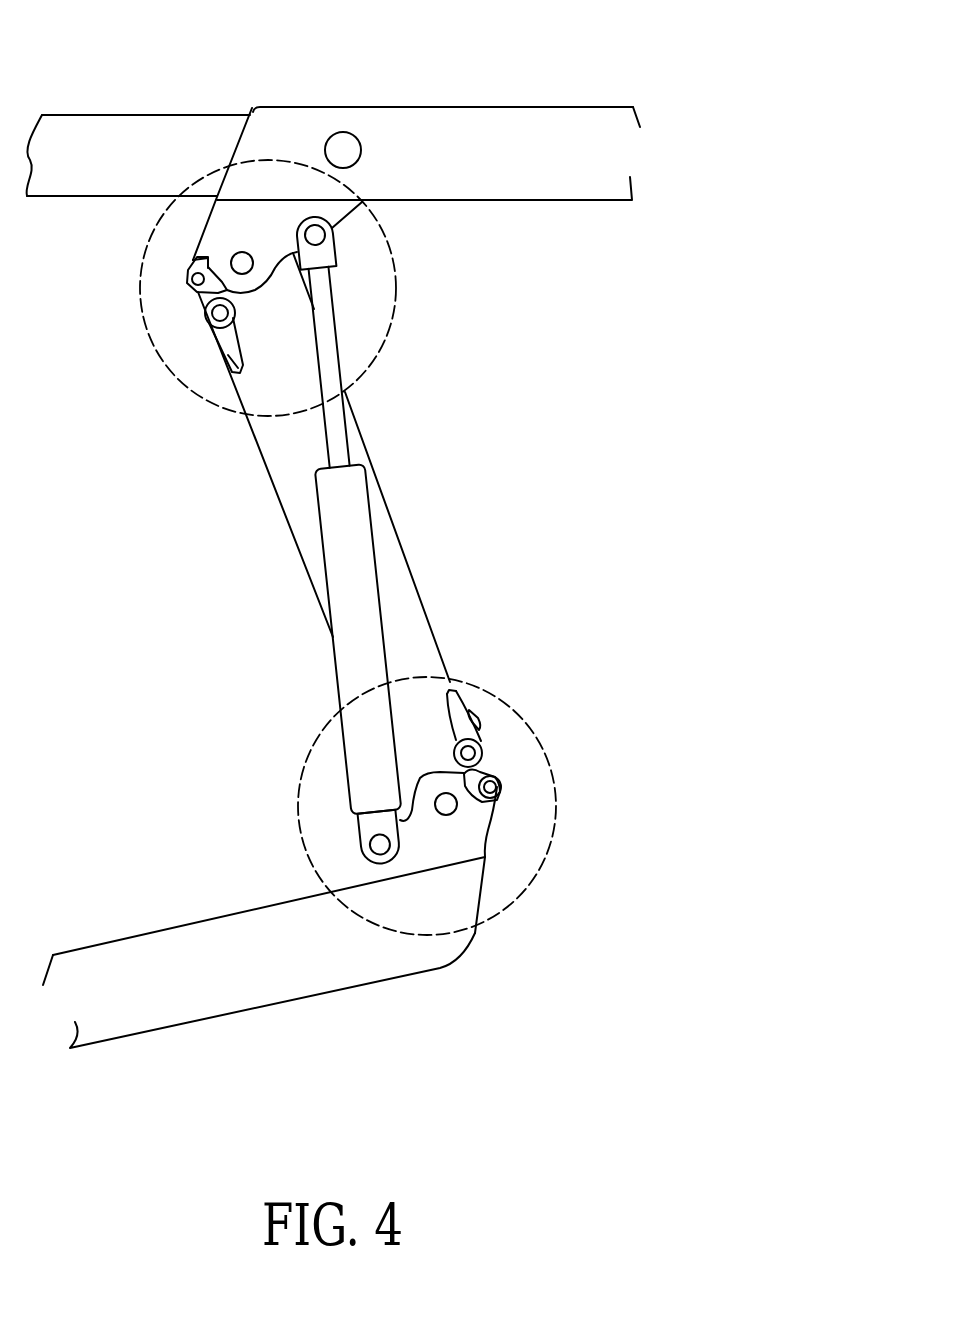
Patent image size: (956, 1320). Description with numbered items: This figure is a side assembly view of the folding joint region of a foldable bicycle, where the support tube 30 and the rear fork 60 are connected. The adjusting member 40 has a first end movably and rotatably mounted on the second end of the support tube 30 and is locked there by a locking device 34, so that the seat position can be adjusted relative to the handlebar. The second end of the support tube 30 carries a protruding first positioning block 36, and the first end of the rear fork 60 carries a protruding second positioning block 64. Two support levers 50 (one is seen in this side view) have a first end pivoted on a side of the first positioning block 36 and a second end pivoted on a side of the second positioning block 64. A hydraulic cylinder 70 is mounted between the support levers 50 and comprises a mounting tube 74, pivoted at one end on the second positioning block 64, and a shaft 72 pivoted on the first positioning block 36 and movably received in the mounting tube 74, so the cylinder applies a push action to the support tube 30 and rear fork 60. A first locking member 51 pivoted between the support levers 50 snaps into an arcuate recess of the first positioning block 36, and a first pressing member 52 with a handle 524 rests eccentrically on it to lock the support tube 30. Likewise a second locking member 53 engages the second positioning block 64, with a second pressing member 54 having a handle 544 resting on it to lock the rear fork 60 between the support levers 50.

The support tube 30 is at (473, 92).
The locking device 34 is at (341, 150).
The first positioning block 36 is at (218, 232).
The adjusting member 40 is at (102, 105).
The support levers 50 is at (262, 485).
The first locking member 51 is at (185, 279).
The first pressing member 52 is at (207, 333).
The handle 524 is at (228, 367).
The second locking member 53 is at (500, 778).
The second pressing member 54 is at (483, 737).
The handle 544 is at (457, 697).
The rear fork 60 is at (193, 1042).
The second positioning block 64 is at (460, 830).
The hydraulic cylinder 70 is at (365, 540).
The shaft 72 is at (329, 367).
The mounting tube 74 is at (335, 676).